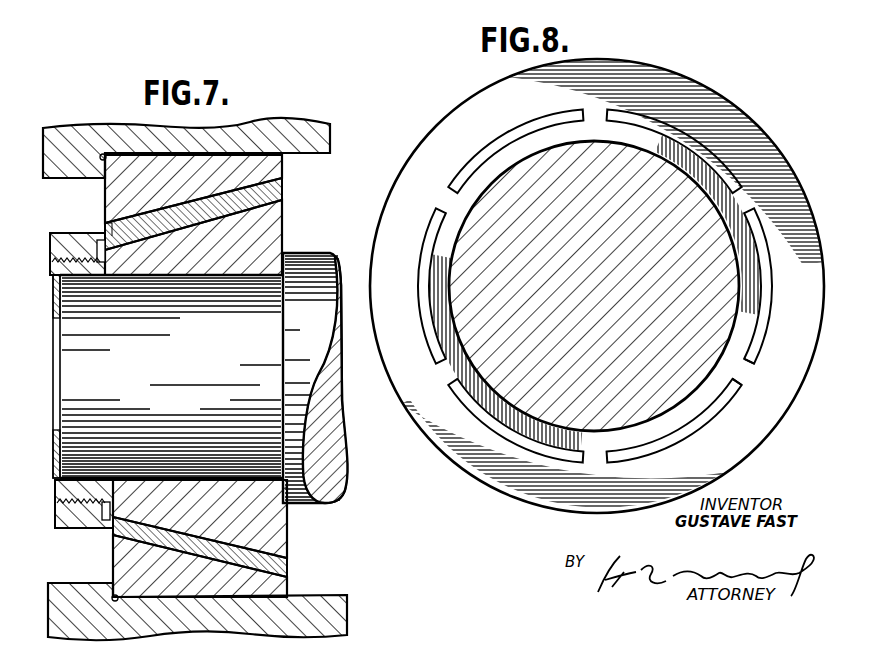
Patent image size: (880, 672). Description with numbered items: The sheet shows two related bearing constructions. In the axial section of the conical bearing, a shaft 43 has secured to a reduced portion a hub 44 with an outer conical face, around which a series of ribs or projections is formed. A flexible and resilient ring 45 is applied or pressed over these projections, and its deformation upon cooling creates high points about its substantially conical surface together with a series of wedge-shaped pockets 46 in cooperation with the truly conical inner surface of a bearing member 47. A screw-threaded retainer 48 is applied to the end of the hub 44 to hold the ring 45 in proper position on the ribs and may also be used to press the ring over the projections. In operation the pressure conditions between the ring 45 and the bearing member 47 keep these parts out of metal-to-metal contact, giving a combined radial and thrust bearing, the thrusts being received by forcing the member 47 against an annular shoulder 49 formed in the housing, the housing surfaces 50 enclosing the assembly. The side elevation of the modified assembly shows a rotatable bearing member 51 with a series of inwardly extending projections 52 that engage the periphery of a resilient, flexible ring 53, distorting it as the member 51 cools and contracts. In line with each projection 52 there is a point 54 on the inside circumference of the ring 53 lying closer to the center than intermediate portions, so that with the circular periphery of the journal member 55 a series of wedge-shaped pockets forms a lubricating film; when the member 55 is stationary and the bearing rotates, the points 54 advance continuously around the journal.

In FIG. 7, the shaft 43 is at (317, 268).
In FIG. 7, the hub 44 is at (268, 228).
In FIG. 7, the flexible and resilient ring 45 is at (283, 189).
In FIG. 7, the wedge-shaped pockets 46 is at (103, 227).
In FIG. 7, the bearing member 47 is at (232, 170).
In FIG. 7, the screw-threaded retainer 48 is at (68, 242).
In FIG. 7, the annular shoulder 49 is at (100, 155).
In FIG. 7, the housing 50 is at (120, 138).
In FIG. 8, the rotatable bearing member 51 is at (703, 106).
In FIG. 8, the inwardly extending projections 52 is at (740, 196).
In FIG. 8, the resilient, flexible ring 53 is at (742, 339).
In FIG. 8, the point 54 is at (735, 372).
In FIG. 8, the journal member 55 is at (523, 358).